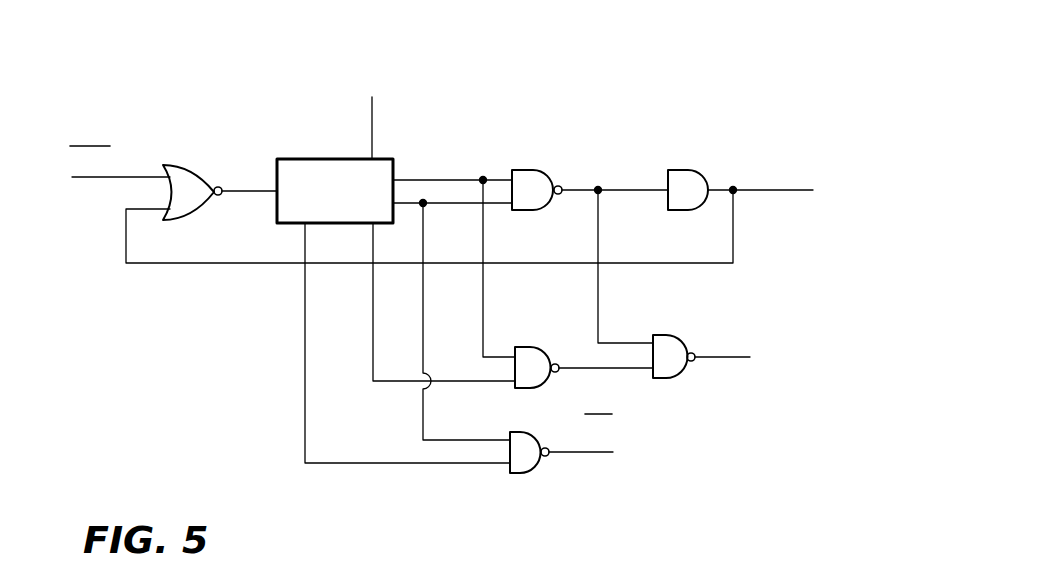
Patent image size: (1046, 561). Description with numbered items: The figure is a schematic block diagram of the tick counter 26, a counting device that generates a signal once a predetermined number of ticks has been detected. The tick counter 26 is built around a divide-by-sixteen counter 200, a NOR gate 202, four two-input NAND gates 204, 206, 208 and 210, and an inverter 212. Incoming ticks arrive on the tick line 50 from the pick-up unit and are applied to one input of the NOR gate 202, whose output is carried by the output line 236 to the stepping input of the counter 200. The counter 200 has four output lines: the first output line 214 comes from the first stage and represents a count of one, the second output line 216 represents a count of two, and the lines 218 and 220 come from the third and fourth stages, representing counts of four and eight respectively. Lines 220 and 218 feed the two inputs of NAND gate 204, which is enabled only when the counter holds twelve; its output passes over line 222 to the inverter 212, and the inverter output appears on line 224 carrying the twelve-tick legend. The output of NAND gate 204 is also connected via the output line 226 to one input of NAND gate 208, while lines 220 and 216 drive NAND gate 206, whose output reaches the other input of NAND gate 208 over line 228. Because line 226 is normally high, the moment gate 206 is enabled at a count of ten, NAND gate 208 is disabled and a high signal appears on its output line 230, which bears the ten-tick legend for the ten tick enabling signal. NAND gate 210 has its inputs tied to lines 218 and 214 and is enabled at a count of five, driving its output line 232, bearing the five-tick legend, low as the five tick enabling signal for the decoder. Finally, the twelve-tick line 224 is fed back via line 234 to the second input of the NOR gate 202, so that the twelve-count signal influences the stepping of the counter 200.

The tick line 50 is at (132, 177).
The NOR gate 202 is at (195, 173).
The output line 236 is at (236, 194).
The line 234 is at (194, 264).
The ÷16 counter 200 is at (313, 159).
The output line 220 is at (432, 178).
The output line 218 is at (453, 206).
The first output line 214 is at (305, 240).
The second output line 216 is at (373, 335).
The NAND gate 204 is at (545, 170).
The line 222 is at (661, 150).
The output line 226 is at (598, 236).
The inverter 212 is at (693, 172).
The output line 224 is at (758, 193).
The NAND gate 206 is at (560, 320).
The line 228 is at (628, 370).
The NAND gate 208 is at (700, 318).
The output line 230 is at (725, 358).
The NAND gate 210 is at (518, 432).
The output line 232 is at (587, 454).
The tick counter 26 is at (417, 470).